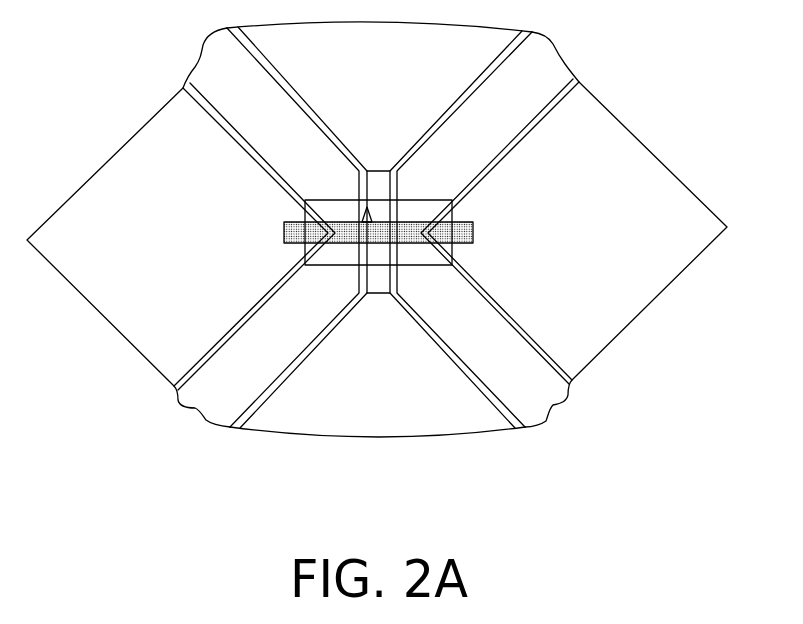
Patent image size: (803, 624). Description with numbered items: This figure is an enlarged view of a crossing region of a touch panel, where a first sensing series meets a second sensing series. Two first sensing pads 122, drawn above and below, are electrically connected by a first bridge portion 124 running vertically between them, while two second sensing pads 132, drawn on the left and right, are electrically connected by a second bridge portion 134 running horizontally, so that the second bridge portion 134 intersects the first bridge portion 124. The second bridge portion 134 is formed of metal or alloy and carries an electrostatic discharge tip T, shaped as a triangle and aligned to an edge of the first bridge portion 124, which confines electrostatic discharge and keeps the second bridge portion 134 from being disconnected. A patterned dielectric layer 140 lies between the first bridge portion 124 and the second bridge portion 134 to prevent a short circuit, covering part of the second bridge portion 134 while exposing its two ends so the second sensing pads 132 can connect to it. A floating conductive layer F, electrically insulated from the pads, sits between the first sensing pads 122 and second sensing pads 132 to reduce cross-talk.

The first sensing pad 122 is at (402, 76).
The first bridge portion 124 is at (380, 277).
The second sensing pad 132 is at (176, 262).
The second bridge portion 134 is at (473, 232).
The patterned dielectric layer 140 is at (331, 207).
The electrostatic discharge tip T is at (365, 222).
The floating conductive layer F is at (550, 73).